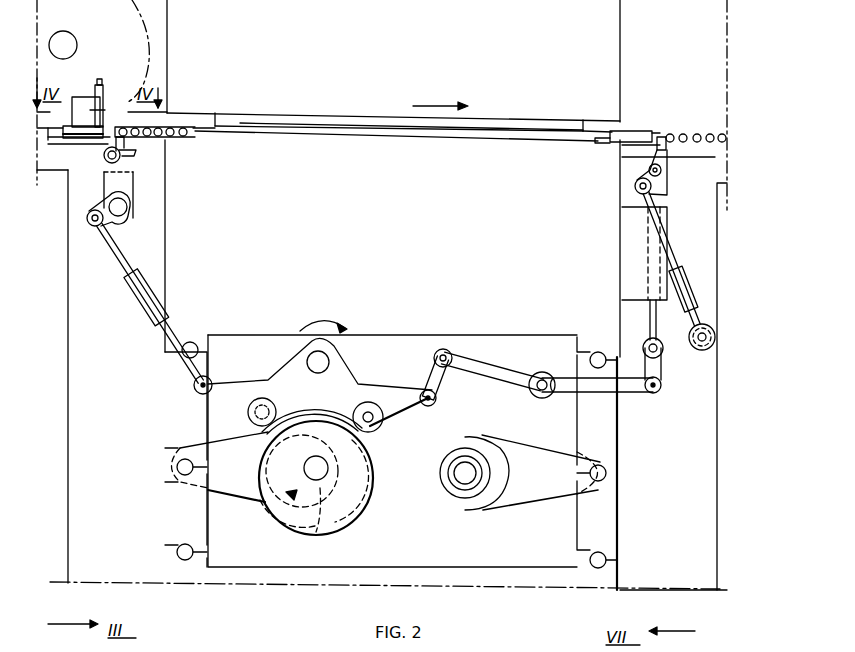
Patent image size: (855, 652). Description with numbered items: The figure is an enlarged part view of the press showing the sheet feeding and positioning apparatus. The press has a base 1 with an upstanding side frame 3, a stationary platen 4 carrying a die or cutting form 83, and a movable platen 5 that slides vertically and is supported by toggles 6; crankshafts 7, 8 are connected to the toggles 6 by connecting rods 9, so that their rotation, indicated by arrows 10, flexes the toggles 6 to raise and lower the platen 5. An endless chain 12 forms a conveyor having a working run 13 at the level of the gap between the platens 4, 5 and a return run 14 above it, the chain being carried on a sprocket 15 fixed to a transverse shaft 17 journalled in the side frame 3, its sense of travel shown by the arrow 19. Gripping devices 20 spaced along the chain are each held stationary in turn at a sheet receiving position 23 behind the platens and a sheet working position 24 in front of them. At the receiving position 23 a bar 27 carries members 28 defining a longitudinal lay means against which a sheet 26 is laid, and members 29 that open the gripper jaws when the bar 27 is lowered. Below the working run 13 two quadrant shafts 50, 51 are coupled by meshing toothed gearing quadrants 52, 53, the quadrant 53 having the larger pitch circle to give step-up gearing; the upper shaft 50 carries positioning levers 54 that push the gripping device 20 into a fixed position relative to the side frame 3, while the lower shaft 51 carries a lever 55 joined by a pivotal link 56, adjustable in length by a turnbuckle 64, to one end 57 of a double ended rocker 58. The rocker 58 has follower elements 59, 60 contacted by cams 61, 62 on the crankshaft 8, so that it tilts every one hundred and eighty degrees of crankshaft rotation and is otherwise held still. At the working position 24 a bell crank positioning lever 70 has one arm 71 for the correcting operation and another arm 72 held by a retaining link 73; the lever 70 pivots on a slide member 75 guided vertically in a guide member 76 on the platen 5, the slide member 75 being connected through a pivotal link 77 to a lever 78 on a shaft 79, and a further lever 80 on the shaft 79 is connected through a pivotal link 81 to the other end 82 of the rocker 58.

The base 1 is at (444, 566).
The side frame 3 is at (66, 448).
The stationary platen 4 is at (393, 66).
The movable platen 5 is at (351, 197).
The toggles 6 is at (172, 410).
The crankshaft 7 is at (455, 480).
The crankshaft 8 is at (326, 468).
The connecting rods 9 is at (244, 500).
The arrows 10 is at (316, 530).
The endless chain 12 is at (176, 127).
The working run 13 is at (186, 130).
The return run 14 is at (702, 350).
The sprocket 15 is at (152, 46).
The transverse shaft 17 is at (78, 42).
The arrow 19 is at (440, 93).
The gripping device 20 is at (85, 134).
The sheet receiving position 23 is at (70, 172).
The sheet working position 24 is at (650, 129).
The sheet 26 is at (490, 139).
The bar 27 is at (106, 121).
The lay members 28 is at (72, 97).
The gripper operating members 29 is at (105, 118).
The quadrant shaft 50 is at (120, 160).
The quadrant shaft 51 is at (140, 214).
The toothed gearing quadrant 52 is at (126, 149).
The toothed gearing quadrant 53 is at (135, 178).
The positioning lever 54 is at (130, 143).
The lever 55 is at (120, 222).
The pivotal link 56 is at (112, 256).
The rocker end 57 is at (194, 386).
The double ended rocker 58 is at (242, 380).
The follower element 59 is at (251, 418).
The follower element 60 is at (378, 428).
The cam 61 is at (317, 398).
The cam 62 is at (360, 520).
The turnbuckle 64 is at (141, 296).
The positioning lever 70 is at (668, 154).
The arm 71 is at (668, 138).
The arm 72 is at (654, 187).
The retaining link 73 is at (673, 262).
The slide member 75 is at (649, 325).
The guide member 76 is at (632, 283).
The pivotal link 77 is at (656, 366).
The lever 78 is at (636, 393).
The shaft 79 is at (546, 398).
The lever 80 is at (471, 380).
The pivotal link 81 is at (436, 376).
The rocker end 82 is at (432, 406).
The die or cutting form 83 is at (322, 126).